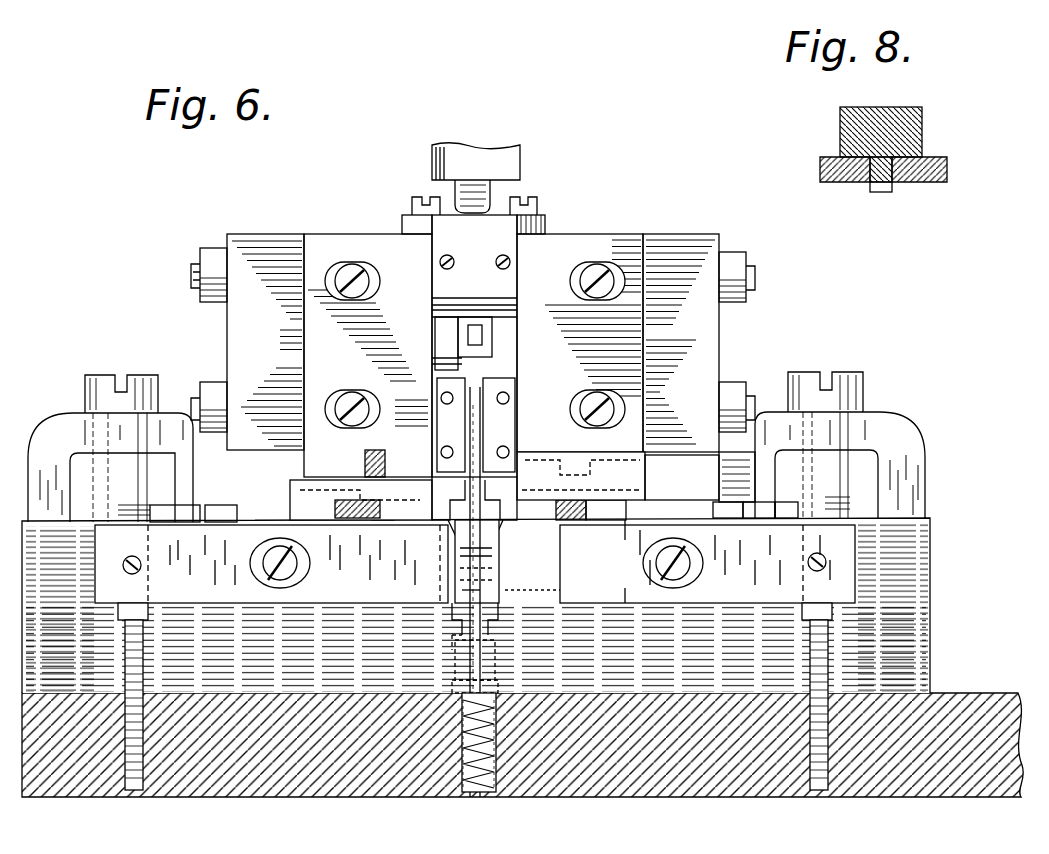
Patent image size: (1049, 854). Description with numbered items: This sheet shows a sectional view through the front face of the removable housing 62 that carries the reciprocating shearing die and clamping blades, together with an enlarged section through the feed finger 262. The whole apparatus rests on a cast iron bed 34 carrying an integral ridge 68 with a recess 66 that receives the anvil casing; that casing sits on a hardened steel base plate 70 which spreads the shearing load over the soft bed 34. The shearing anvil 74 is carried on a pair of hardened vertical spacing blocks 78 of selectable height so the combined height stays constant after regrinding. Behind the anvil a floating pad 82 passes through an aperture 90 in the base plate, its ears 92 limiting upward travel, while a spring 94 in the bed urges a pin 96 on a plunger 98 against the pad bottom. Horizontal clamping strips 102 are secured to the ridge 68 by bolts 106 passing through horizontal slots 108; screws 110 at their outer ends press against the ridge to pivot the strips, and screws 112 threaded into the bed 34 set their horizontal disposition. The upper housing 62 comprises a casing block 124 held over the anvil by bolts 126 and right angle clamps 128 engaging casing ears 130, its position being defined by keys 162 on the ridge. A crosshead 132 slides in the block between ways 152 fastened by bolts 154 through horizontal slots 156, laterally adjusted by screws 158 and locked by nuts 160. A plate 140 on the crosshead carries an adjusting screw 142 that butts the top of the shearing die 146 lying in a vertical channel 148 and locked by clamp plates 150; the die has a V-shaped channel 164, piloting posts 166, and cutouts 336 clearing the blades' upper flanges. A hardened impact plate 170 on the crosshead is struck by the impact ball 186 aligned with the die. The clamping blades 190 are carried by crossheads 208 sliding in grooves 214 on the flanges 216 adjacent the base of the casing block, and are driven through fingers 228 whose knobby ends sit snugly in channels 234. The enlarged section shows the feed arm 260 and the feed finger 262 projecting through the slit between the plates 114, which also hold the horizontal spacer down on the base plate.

In FIG. 6, the bed 34 is at (975, 712).
In FIG. 6, the housing for the reciprocating shearing die and clamps 62 is at (315, 232).
In FIG. 6, the recess 66 is at (650, 603).
In FIG. 6, the ridge 68 is at (912, 622).
In FIG. 6, the base plate 70 is at (462, 592).
In FIG. 6, the shearing anvil 74 is at (496, 552).
In FIG. 6, the vertical spacing blocks 78 is at (492, 572).
In FIG. 6, the floating pad 82 is at (512, 622).
In FIG. 6, the aperture 90 is at (546, 590).
In FIG. 6, the ears 92 is at (428, 640).
In FIG. 6, the spring 94 is at (500, 740).
In FIG. 6, the pin 96 is at (500, 652).
In FIG. 6, the plunger 98 is at (500, 680).
In FIG. 6, the clamping strips 102 is at (228, 600).
In FIG. 6, the bolts 106 is at (292, 588).
In FIG. 6, the horizontal slots 108 is at (303, 590).
In FIG. 6, the screws 110 is at (122, 568).
In FIG. 6, the screws 112 is at (118, 618).
In FIG. 8, the plates 114 is at (832, 165).
In FIG. 6, the casing block 124 is at (684, 244).
In FIG. 6, the bolts 126 is at (858, 392).
In FIG. 6, the right angle clamps 128 is at (905, 448).
In FIG. 6, the casing ears 130 is at (760, 470).
In FIG. 6, the crosshead 132 is at (438, 335).
In FIG. 6, the plate 140 is at (505, 286).
In FIG. 6, the adjusting screw 142 is at (462, 318).
In FIG. 6, the shearing die 146 is at (492, 348).
In FIG. 6, the vertical channel 148 is at (436, 360).
In FIG. 6, the clamp plates 150 is at (508, 400).
In FIG. 6, the ways 152 is at (624, 234).
In FIG. 6, the bolts 154 is at (612, 281).
In FIG. 6, the horizontal slots 156 is at (626, 400).
In FIG. 6, the screws 158 is at (193, 282).
In FIG. 6, the nuts 160 is at (212, 250).
In FIG. 6, the keys 162 is at (210, 508).
In FIG. 6, the V-shaped channel 164 is at (500, 432).
In FIG. 6, the posts 166 is at (516, 328).
In FIG. 6, the impact plate 170 is at (546, 222).
In FIG. 6, the impact ball 186 is at (490, 208).
In FIG. 6, the clamping blades 190 is at (447, 532).
In FIG. 6, the crossheads 208 is at (610, 522).
In FIG. 6, the grooves 214 is at (367, 478).
In FIG. 6, the flanges 216 is at (632, 462).
In FIG. 6, the fingers 228 is at (385, 522).
In FIG. 6, the channels 234 is at (570, 522).
In FIG. 8, the feed arm 260 is at (910, 135).
In FIG. 8, the feed finger 262 is at (893, 175).
In FIG. 6, the cutouts 336 is at (448, 400).